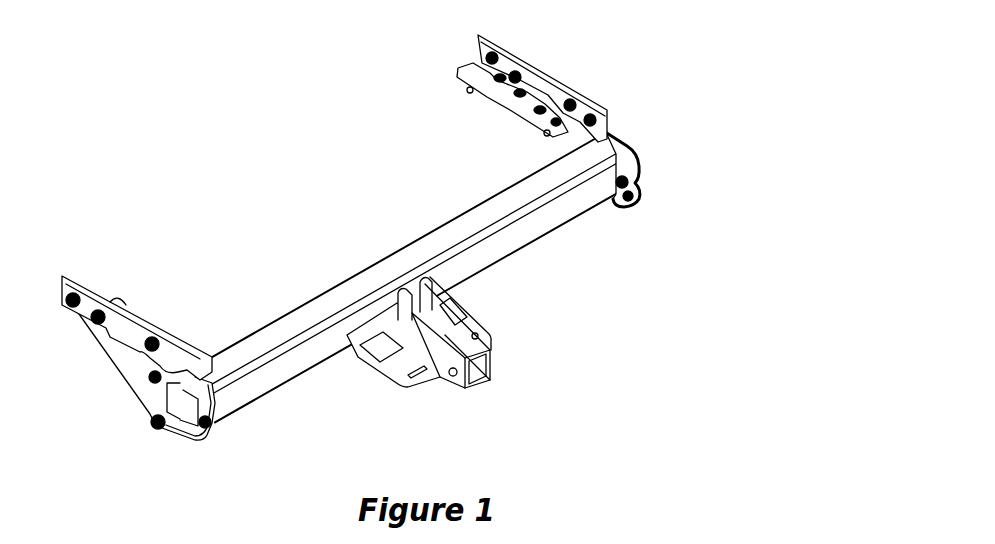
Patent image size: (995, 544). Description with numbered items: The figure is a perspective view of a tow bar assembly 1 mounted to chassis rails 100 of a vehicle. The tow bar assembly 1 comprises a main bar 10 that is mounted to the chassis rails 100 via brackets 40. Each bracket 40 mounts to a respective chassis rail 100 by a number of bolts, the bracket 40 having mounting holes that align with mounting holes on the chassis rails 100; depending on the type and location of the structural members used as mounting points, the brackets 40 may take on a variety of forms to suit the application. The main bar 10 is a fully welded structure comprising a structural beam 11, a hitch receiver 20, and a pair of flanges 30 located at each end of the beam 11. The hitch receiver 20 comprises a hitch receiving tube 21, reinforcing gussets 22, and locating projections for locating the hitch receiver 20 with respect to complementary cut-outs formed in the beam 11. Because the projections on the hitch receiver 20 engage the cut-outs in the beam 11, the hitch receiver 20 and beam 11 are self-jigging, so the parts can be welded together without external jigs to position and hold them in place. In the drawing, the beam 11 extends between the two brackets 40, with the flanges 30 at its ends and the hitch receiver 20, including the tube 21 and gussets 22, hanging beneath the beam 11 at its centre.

The tow bar assembly 1 is at (260, 123).
The main bar 10 is at (416, 240).
The structural beam 11 is at (530, 227).
The hitch receiver 20 is at (440, 407).
The hitch receiving tube 21 is at (482, 385).
The reinforcing gussets 22 is at (398, 371).
The flanges 30 is at (625, 206).
The brackets 40 is at (140, 372).
The chassis rails 100 is at (139, 313).